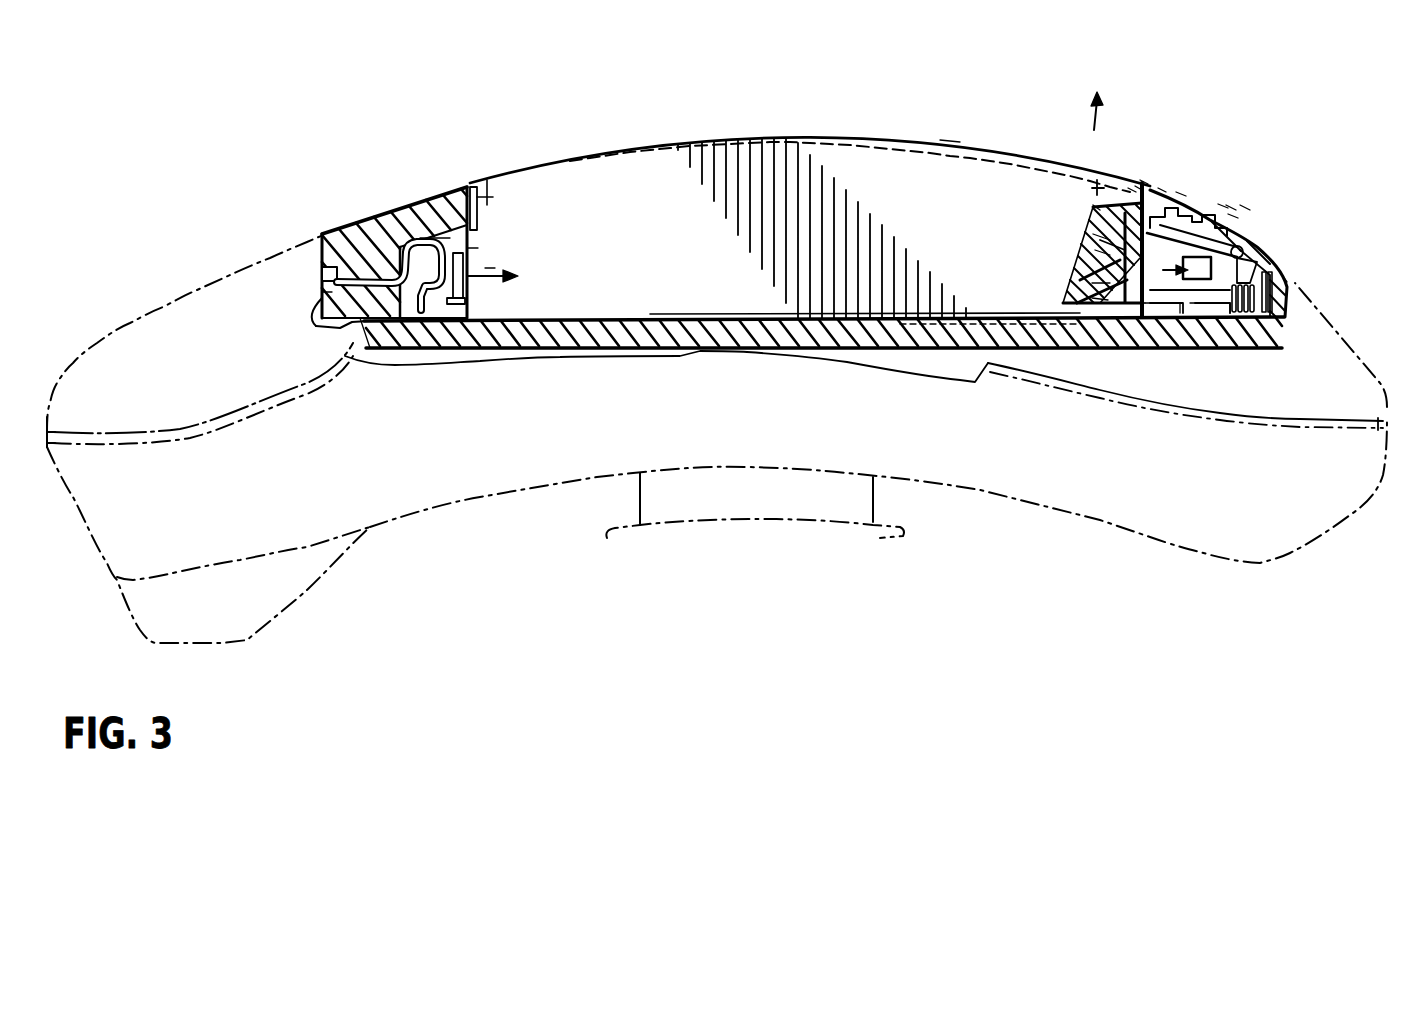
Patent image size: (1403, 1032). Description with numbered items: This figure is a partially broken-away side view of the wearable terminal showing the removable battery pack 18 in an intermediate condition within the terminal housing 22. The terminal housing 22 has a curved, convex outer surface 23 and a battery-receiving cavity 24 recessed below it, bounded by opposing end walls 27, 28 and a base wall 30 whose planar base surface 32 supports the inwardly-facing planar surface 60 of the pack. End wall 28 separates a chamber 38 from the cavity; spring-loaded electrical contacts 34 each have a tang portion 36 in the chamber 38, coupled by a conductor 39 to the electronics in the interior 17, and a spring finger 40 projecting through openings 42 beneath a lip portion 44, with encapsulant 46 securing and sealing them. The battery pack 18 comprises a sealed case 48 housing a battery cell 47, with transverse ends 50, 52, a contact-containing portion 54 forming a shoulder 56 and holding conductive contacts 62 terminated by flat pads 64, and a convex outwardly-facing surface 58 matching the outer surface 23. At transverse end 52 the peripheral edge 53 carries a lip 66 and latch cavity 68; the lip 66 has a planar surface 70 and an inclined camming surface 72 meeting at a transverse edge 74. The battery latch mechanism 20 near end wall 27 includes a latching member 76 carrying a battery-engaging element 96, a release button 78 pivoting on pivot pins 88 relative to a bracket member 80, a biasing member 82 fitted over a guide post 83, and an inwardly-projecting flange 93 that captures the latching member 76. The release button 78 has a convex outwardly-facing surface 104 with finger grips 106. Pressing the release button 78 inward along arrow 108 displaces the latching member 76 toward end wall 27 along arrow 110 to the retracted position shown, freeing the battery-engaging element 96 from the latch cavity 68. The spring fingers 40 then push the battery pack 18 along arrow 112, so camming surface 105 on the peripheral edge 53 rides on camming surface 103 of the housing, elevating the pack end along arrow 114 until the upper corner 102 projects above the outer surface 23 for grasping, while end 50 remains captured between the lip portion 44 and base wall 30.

The interior 17 is at (938, 352).
The removable battery pack 18 is at (935, 143).
The battery latch mechanism 20 is at (1305, 167).
The terminal housing 22 is at (460, 504).
The outer surface 23 is at (213, 278).
The battery-receiving cavity 24 is at (435, 225).
The end wall 27 is at (1285, 278).
The end wall 28 is at (368, 348).
The base wall 30 is at (626, 348).
The base surface 32 is at (980, 318).
The spring-loaded electrical contacts 34 is at (367, 230).
The tang portion 36 is at (328, 325).
The chamber 38 is at (318, 310).
The conductor 39 is at (322, 274).
The spring finger 40 is at (432, 318).
The openings 42 is at (395, 348).
The lip portion 44 is at (432, 240).
The encapsulant 46 is at (320, 292).
The battery cell 47 is at (1093, 205).
The sealed case 48 is at (670, 246).
The transverse end 50 is at (489, 180).
The transverse end 52 is at (1097, 180).
The peripheral edge 53 is at (1180, 192).
The contact-containing portion 54 is at (476, 248).
The outwardly-facing shoulder 56 is at (473, 188).
The outwardly-facing surface 58 is at (960, 142).
The inwardly-facing planar surface 60 is at (843, 348).
The conductive contacts 62 is at (490, 283).
The flat pad 64 is at (456, 318).
The lip 66 is at (1106, 332).
The latch cavity 68 is at (1092, 285).
The planar surface 70 is at (1092, 300).
The inclined camming surface 72 is at (1130, 332).
The transverse edge 74 is at (1163, 332).
The latching member 76 is at (1095, 252).
The release button 78 is at (1238, 215).
The bracket member 80 is at (1200, 200).
The biasing member 82 is at (1242, 340).
The guide post 83 is at (1220, 348).
The pivot pins 88 is at (1243, 248).
The inwardly-projecting flange 93 is at (1132, 190).
The battery-engaging element 96 is at (1093, 236).
The upper corner 102 is at (1143, 180).
The camming surface 103 is at (1138, 185).
The outwardly-facing surface 104 is at (1245, 205).
The camming surface 105 is at (1162, 188).
The finger grips 106 is at (1230, 205).
The arrow 108 is at (1223, 205).
The arrow 110 is at (1200, 356).
The arrow 112 is at (492, 268).
The arrow 114 is at (1090, 118).